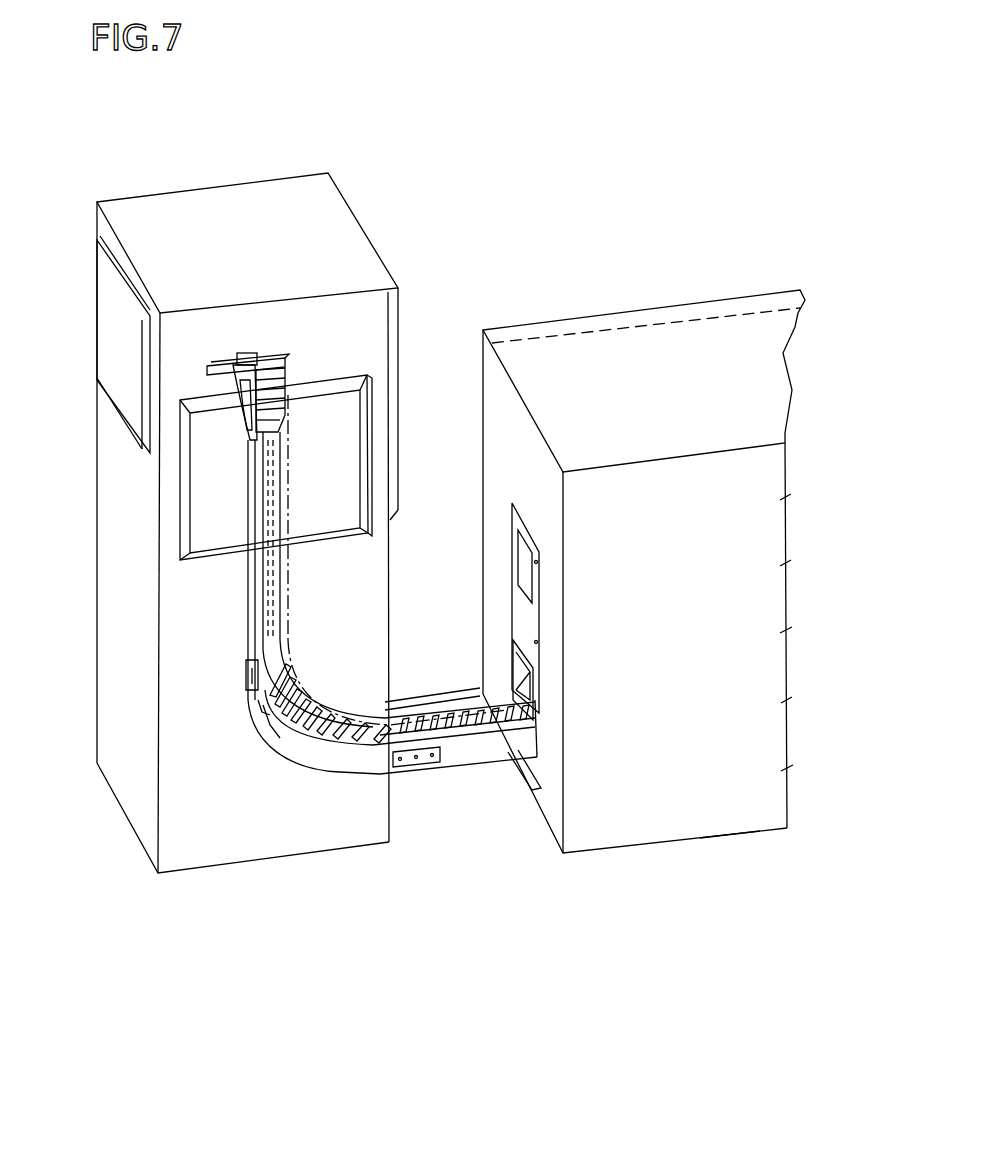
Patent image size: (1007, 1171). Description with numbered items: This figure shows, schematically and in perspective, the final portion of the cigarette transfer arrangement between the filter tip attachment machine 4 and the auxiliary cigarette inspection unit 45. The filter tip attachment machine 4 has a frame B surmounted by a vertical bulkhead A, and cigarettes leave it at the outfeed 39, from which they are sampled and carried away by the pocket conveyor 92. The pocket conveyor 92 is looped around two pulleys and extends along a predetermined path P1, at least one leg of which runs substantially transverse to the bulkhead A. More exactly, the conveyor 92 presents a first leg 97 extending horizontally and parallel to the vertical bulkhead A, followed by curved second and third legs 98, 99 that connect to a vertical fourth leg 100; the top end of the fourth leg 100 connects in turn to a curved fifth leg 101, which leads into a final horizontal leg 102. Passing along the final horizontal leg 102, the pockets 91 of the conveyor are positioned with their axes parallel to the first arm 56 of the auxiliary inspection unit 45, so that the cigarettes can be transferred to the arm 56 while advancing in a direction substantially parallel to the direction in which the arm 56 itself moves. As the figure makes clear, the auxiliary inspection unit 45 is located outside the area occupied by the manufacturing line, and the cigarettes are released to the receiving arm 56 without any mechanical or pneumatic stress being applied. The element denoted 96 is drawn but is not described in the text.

The filter tip attachment machine 4 is at (590, 312).
The outfeed 39 is at (517, 658).
The auxiliary cigarette inspection unit 45 is at (92, 622).
The first arm 56 is at (212, 361).
The pockets 91 is at (348, 729).
The pocket conveyor 92 is at (338, 763).
The guide bracket 96 is at (239, 409).
The first leg 97 is at (463, 759).
The second leg 98 is at (289, 744).
The third leg 99 is at (254, 687).
The fourth leg 100 is at (276, 541).
The fifth leg 101 is at (283, 403).
The final horizontal leg 102 is at (279, 357).
The vertical bulkhead A is at (689, 316).
The frame B is at (725, 836).
The predetermined path P1 is at (290, 585).